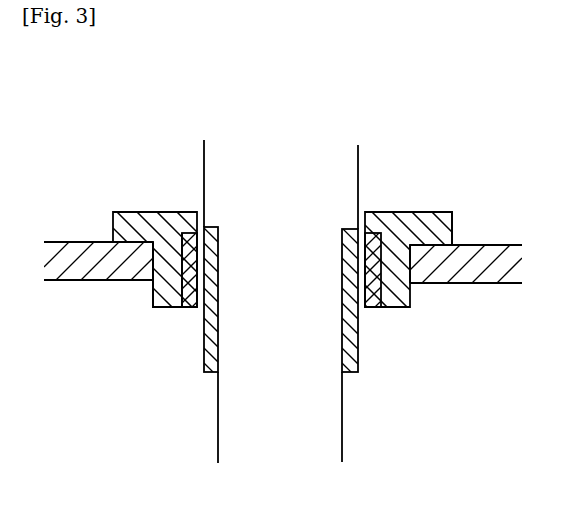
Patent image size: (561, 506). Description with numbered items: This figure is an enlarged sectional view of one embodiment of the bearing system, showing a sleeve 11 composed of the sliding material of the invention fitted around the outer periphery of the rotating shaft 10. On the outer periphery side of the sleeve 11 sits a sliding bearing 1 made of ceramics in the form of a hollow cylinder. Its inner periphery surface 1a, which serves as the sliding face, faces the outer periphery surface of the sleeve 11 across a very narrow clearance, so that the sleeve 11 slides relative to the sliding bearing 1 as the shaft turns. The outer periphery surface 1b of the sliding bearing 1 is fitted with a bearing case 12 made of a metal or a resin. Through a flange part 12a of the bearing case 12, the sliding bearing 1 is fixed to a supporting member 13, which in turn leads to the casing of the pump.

The rotating shaft 10 is at (314, 170).
The sleeve 11 is at (353, 355).
The bearing case 12 is at (402, 308).
The flange part 12a is at (433, 212).
The supporting member 13 is at (490, 245).
The sliding bearing 1 is at (373, 308).
The inner periphery surface 1a is at (182, 308).
The outer periphery surface 1b is at (182, 287).